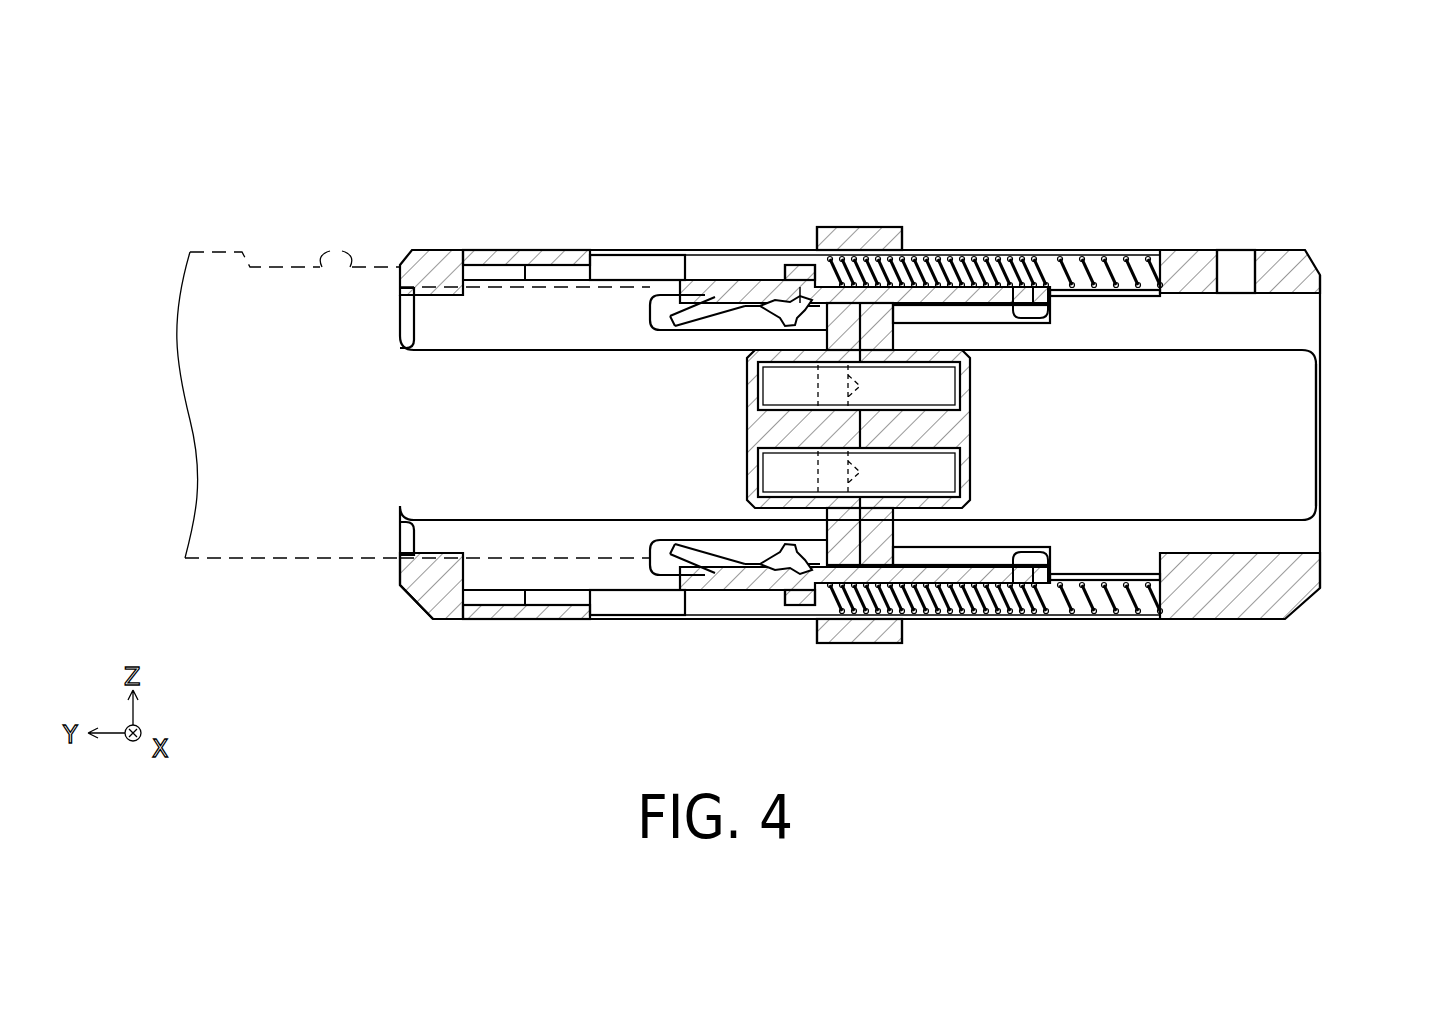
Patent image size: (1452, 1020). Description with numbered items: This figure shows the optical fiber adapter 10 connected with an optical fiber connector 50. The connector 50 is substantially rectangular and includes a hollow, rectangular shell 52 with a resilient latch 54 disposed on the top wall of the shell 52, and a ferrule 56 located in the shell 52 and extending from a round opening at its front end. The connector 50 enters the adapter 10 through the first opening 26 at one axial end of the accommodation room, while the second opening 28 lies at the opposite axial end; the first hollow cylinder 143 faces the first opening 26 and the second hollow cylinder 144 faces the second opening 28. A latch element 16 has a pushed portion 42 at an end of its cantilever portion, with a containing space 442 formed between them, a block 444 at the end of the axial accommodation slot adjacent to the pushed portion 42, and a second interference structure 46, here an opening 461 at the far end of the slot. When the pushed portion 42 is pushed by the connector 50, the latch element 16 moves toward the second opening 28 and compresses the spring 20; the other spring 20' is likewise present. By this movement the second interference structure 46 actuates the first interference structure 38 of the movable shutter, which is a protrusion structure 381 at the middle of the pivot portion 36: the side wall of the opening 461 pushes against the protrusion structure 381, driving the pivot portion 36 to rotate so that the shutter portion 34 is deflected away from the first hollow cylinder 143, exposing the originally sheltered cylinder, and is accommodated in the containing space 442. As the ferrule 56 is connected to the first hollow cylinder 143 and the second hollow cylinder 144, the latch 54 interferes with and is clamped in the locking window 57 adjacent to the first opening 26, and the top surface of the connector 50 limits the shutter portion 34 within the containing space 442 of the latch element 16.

The optical fiber adapter 10 is at (1265, 218).
The latch element 16 is at (741, 280).
The spring 20 is at (995, 220).
The spring 20' is at (995, 654).
The first opening 26 is at (388, 590).
The second opening 28 is at (1354, 461).
The shutter portion 34 is at (745, 298).
The pivot portion 36 is at (783, 312).
The first interference structure 38 is at (920, 435).
The protrusion structure 381 is at (838, 290).
The pushed portion 42 is at (675, 300).
The containing space 442 is at (650, 340).
The block 444 is at (800, 283).
The second interference structure 46 is at (1030, 435).
The opening 461 is at (1028, 297).
The optical fiber connector 50 is at (238, 220).
The shell 52 is at (300, 562).
The resilient latch 54 is at (493, 248).
The ferrule 56 is at (893, 643).
The locking window 57 is at (498, 270).
The first hollow cylinder 143 is at (798, 512).
The second hollow cylinder 144 is at (928, 508).